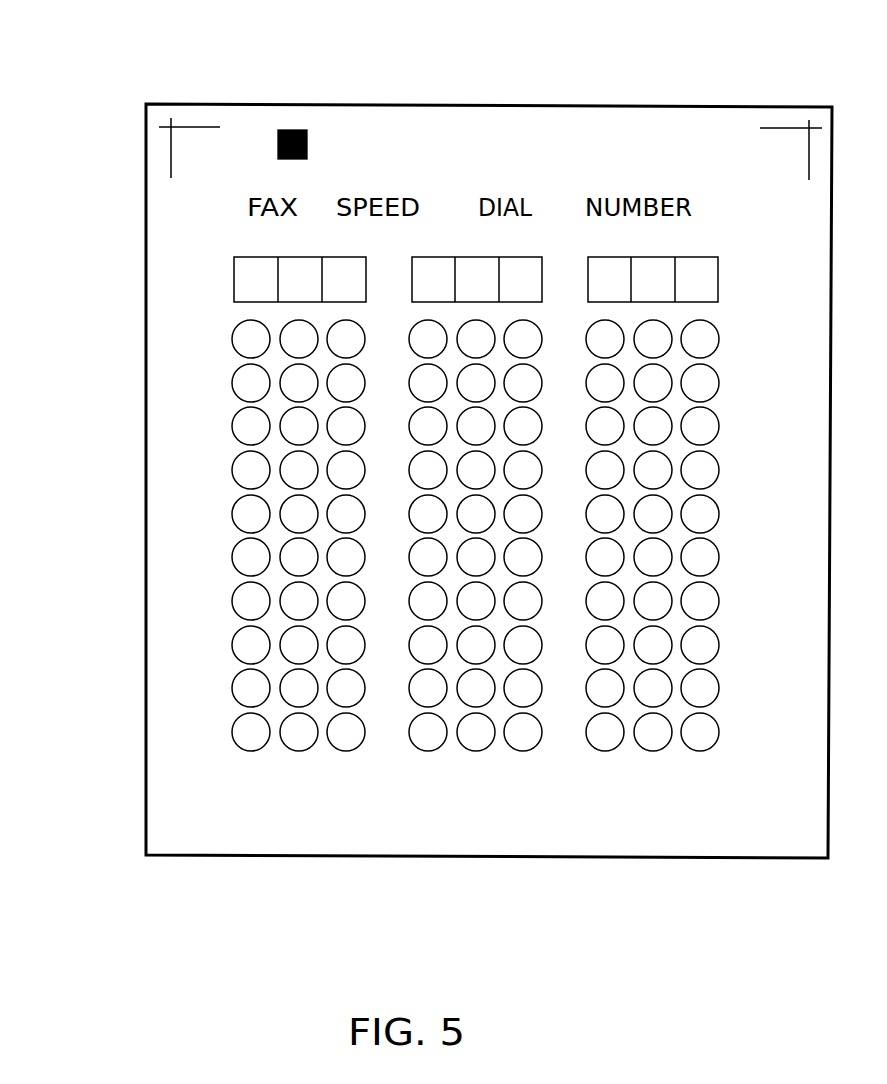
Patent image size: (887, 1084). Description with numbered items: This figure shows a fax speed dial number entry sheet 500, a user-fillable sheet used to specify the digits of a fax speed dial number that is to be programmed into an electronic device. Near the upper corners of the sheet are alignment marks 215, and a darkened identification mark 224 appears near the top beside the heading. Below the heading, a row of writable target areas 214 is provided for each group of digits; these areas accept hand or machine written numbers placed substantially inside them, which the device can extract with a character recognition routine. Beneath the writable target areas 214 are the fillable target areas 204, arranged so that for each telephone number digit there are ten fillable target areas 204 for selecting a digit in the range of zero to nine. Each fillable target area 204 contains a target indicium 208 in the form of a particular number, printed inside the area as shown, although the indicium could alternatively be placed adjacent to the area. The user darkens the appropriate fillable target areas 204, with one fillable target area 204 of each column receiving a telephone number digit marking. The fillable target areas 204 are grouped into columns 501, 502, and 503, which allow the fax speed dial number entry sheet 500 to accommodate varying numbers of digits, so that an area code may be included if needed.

The fax speed dial number entry sheet 500 is at (250, 858).
The alignment mark 215 is at (130, 180).
The identification mark 224 is at (292, 130).
The writable target area 214 is at (130, 302).
The fillable target area 204 is at (363, 571).
The target indicium 208 is at (222, 733).
The column 501 is at (186, 571).
The column 502 is at (474, 571).
The column 503 is at (651, 571).